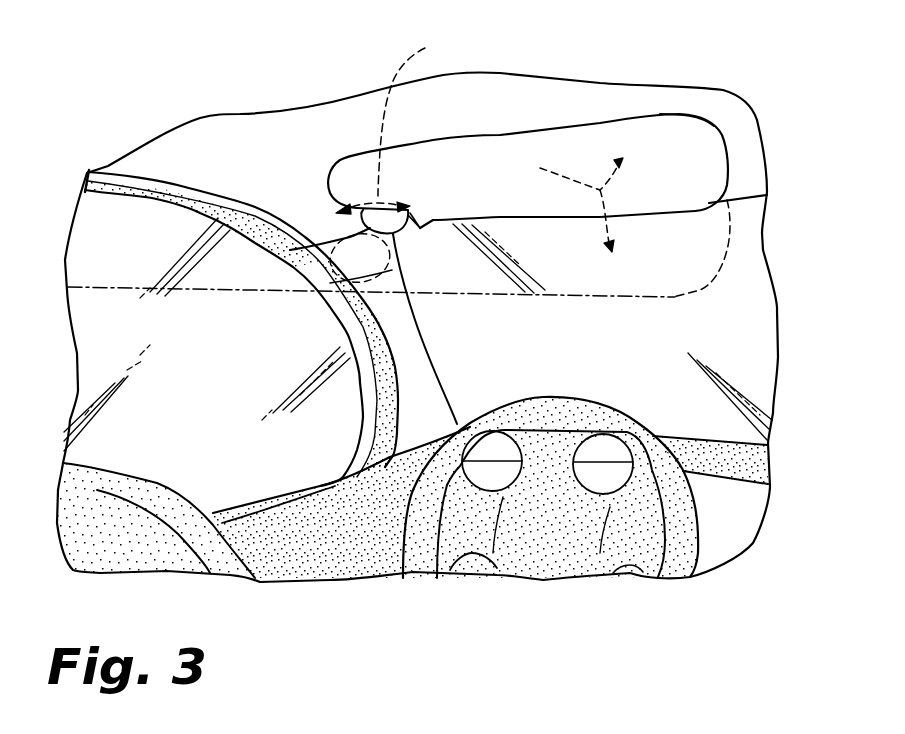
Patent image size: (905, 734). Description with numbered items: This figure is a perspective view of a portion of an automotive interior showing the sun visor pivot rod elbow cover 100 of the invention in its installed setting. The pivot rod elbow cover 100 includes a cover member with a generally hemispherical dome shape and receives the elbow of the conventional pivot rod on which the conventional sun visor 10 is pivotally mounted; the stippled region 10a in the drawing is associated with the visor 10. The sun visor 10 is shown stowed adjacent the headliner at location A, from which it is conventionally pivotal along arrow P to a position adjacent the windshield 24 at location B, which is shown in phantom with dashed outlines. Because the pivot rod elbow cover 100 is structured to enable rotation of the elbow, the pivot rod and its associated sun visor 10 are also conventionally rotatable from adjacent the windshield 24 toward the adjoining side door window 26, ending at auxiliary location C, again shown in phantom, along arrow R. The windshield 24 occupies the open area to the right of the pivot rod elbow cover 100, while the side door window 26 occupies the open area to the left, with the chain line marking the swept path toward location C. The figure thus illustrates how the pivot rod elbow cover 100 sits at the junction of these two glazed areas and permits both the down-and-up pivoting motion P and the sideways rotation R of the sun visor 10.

The sun visor 10 is at (592, 113).
The lower portion of pad 10a is at (547, 220).
The pivot rod elbow cover 100 is at (405, 243).
The windshield 24 is at (531, 367).
The side door window 26 is at (208, 412).
The location A is at (703, 124).
The location B is at (745, 254).
The arrow P is at (572, 201).
The arrow R is at (390, 125).
The auxiliary location C is at (258, 298).